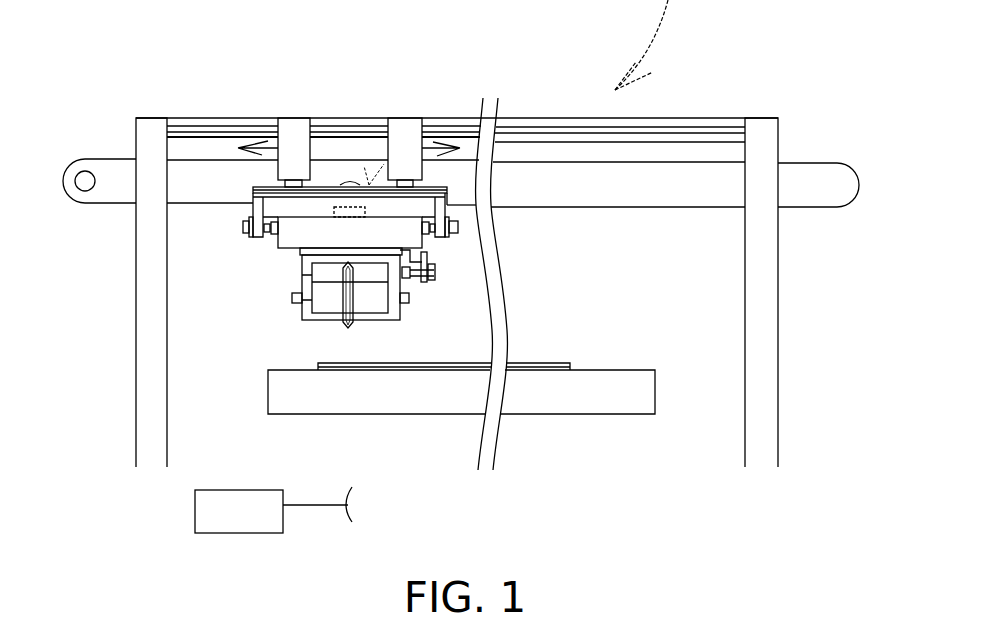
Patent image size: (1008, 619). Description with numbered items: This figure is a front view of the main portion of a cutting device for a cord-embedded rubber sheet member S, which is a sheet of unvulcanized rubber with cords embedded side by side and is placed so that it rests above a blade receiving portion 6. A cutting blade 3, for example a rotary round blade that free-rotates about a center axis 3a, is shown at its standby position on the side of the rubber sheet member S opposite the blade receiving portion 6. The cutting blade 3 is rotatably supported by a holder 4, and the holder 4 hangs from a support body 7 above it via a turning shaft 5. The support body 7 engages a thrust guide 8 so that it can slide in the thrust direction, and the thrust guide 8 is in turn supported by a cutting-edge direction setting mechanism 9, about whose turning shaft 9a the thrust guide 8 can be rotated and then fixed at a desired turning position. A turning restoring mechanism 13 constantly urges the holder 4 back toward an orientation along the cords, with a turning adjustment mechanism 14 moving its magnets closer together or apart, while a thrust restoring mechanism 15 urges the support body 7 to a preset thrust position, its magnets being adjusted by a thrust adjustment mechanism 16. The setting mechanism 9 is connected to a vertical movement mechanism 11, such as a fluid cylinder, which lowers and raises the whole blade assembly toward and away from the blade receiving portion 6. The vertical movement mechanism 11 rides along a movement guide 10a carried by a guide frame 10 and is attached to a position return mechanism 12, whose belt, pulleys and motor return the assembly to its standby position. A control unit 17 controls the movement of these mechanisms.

The cutting blade 3 is at (354, 324).
The center axis 3a is at (303, 294).
The holder 4 is at (308, 316).
The turning shaft 5 is at (345, 253).
The blade receiving portion 6 is at (422, 406).
The support body 7 is at (286, 250).
The thrust guide 8 is at (252, 200).
The cutting-edge direction setting mechanism 9 is at (367, 185).
The turning shaft 9a is at (352, 183).
The guide frame 10 is at (147, 357).
The movement guide 10a is at (203, 124).
The vertical movement mechanism 11 is at (290, 125).
The position return mechanism 12 is at (668, 195).
The turning restoring mechanism 13 is at (412, 282).
The turning adjustment mechanism 14 is at (430, 268).
The thrust restoring mechanism 15 is at (268, 238).
The thrust adjustment mechanism 16 is at (243, 228).
The control unit 17 is at (247, 492).
The rubber sheet member S is at (536, 365).